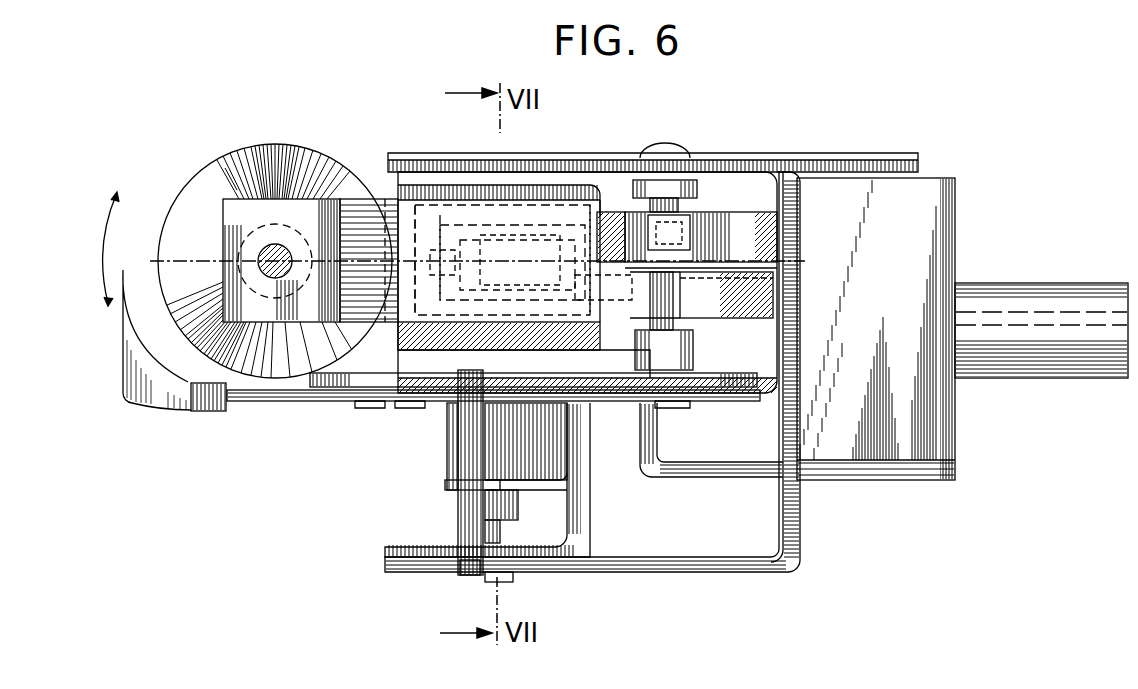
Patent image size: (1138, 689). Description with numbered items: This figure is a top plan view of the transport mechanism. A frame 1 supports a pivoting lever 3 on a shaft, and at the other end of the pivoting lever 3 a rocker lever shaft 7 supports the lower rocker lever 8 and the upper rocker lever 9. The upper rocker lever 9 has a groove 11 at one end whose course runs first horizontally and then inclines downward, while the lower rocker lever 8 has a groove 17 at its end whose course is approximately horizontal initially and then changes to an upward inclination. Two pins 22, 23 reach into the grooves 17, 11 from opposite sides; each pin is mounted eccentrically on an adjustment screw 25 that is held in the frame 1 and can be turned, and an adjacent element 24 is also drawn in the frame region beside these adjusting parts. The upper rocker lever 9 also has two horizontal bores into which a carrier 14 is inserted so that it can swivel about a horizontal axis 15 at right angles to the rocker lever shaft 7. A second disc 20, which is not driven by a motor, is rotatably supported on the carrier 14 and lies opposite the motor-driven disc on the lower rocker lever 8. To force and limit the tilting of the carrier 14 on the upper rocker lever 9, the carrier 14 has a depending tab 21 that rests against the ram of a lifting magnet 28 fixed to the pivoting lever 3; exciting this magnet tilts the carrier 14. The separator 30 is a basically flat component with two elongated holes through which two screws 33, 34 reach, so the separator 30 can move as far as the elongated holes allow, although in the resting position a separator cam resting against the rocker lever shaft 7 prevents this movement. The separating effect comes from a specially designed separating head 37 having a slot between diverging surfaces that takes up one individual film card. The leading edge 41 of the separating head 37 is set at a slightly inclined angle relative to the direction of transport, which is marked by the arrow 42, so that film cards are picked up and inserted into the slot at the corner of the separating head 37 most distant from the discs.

The frame 1 is at (650, 565).
The pivoting lever 3 is at (578, 548).
The rocker lever shaft 7 is at (465, 507).
The lower rocker lever 8 is at (632, 222).
The upper rocker lever 9 is at (707, 296).
The groove 11 is at (770, 303).
The carrier 14 is at (357, 230).
The horizontal axis 15 is at (472, 262).
The groove 17 is at (722, 237).
The second disc 20 is at (190, 204).
The depending tab 21 is at (522, 258).
The pin 22 is at (648, 293).
The pin 23 is at (660, 237).
The nut 24 is at (690, 352).
The adjustment screw 25 is at (688, 192).
The lifting magnet 28 is at (453, 440).
The separator 30 is at (275, 413).
The screw 33 is at (680, 408).
The screw 34 is at (370, 408).
The separating head 37 is at (150, 388).
The leading edge 41 is at (120, 378).
The arrow 42 is at (104, 260).